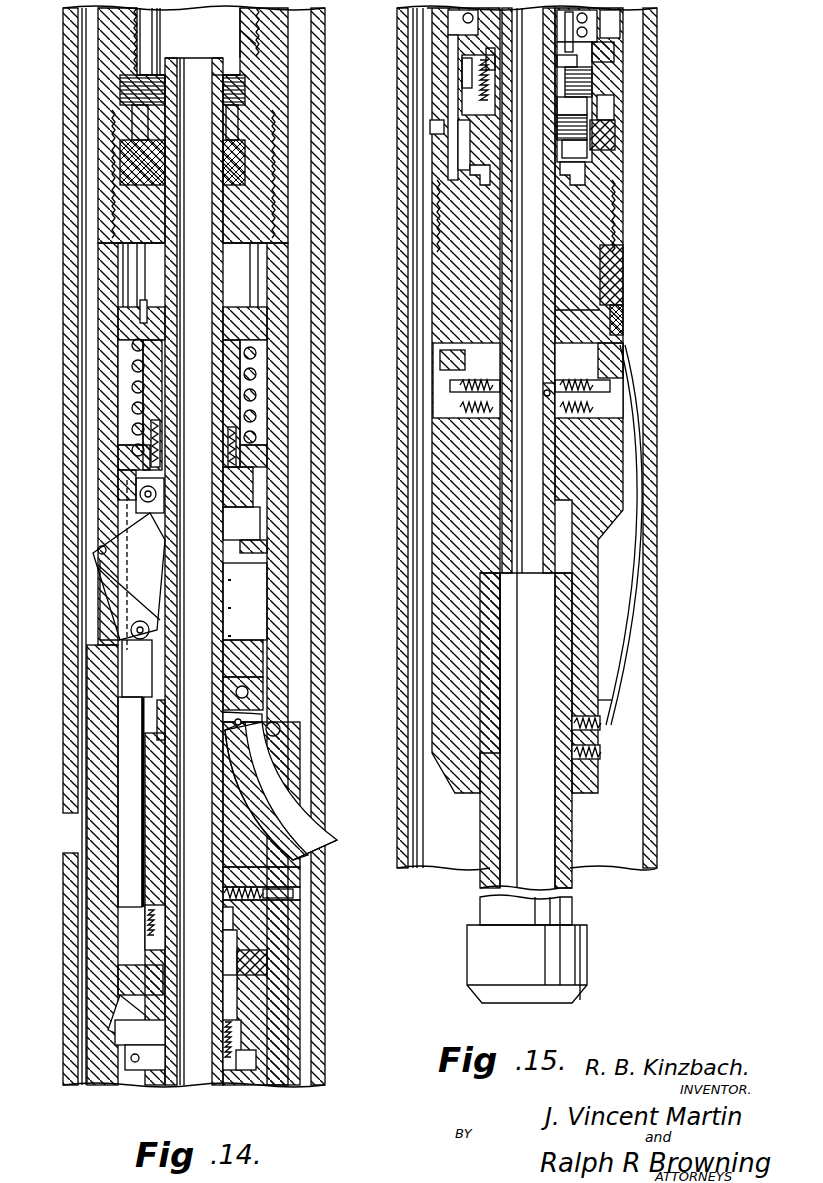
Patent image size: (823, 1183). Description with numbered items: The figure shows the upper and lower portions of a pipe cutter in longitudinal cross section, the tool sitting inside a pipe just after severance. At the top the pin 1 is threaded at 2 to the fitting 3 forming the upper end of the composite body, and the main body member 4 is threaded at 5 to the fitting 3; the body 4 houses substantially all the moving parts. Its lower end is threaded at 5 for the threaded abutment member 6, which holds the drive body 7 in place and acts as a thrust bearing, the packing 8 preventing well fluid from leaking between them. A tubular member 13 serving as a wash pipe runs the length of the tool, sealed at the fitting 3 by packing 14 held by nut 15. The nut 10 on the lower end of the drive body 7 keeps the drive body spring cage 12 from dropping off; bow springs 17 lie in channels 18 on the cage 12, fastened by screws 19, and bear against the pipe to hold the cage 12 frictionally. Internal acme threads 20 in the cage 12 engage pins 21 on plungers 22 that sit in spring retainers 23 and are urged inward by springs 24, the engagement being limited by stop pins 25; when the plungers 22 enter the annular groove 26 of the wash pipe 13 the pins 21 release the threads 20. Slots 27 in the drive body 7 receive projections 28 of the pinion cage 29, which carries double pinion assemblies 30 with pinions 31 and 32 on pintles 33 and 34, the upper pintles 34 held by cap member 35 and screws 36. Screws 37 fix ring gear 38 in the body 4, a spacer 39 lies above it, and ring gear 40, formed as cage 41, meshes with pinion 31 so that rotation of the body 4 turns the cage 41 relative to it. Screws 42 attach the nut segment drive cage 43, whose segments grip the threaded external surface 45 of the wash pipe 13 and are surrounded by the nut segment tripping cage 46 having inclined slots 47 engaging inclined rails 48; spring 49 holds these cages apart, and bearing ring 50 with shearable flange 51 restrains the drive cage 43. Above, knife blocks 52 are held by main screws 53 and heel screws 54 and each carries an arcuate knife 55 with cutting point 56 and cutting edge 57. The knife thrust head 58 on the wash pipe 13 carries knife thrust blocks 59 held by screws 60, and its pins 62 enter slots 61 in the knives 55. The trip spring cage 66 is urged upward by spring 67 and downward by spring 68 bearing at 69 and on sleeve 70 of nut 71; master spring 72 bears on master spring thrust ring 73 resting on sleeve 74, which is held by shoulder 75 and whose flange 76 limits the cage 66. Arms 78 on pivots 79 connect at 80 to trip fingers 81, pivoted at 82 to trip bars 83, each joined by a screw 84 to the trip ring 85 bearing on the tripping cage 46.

In FIG. 14, the pin 1 is at (254, 22).
In FIG. 14, the thread 2 is at (257, 38).
In FIG. 14, the fitting 3 is at (277, 80).
In FIG. 14, the main body member 4 is at (280, 397).
In FIG. 15, the thread 5 is at (617, 230).
In FIG. 15, the threaded abutment member 6 is at (607, 287).
In FIG. 15, the drive body 7 is at (583, 313).
In FIG. 15, the packing 8 is at (620, 320).
In FIG. 15, the nut 10 is at (568, 957).
In FIG. 15, the drive body spring cage 12 is at (443, 590).
In FIG. 14, the tubular member 13 is at (237, 452).
In FIG. 15, the tubular member 13 is at (557, 262).
In FIG. 14, the packing 14 is at (143, 170).
In FIG. 14, the nut 15 is at (143, 127).
In FIG. 15, the bow springs 17 is at (639, 607).
In FIG. 15, the channels 18 is at (612, 557).
In FIG. 15, the screws 19 is at (607, 722).
In FIG. 15, the internal acme threads 20 is at (603, 353).
In FIG. 15, the pins 21 is at (588, 385).
In FIG. 15, the plungers 22 is at (553, 387).
In FIG. 15, the spring retainers 23 is at (470, 405).
In FIG. 15, the springs 24 is at (470, 380).
In FIG. 15, the stop pins 25 is at (453, 387).
In FIG. 15, the annular groove 26 is at (547, 393).
In FIG. 15, the slots 27 is at (573, 173).
In FIG. 15, the projections 28 is at (475, 175).
In FIG. 15, the pinion cage 29 is at (433, 127).
In FIG. 15, the double pinion assembly 30 is at (575, 107).
In FIG. 15, the pinion 31 is at (582, 80).
In FIG. 15, the pinion 32 is at (572, 128).
In FIG. 15, the pintles 33 is at (575, 150).
In FIG. 15, the pintles 34 is at (577, 62).
In FIG. 15, the cap member 35 is at (492, 55).
In FIG. 15, the screws 36 is at (460, 88).
In FIG. 15, the screws 37 is at (460, 145).
In FIG. 15, the ring gear 38 is at (595, 132).
In FIG. 15, the spacer 39 is at (607, 107).
In FIG. 15, the ring gear 40 is at (483, 118).
In FIG. 15, the cage 41 is at (600, 53).
In FIG. 14, the screws 42 is at (241, 1050).
In FIG. 15, the screws 42 is at (575, 37).
In FIG. 14, the nut segment drive cage 43 is at (233, 1023).
In FIG. 15, the nut segment drive cage 43 is at (588, 28).
In FIG. 14, the threaded external surface 45 is at (228, 985).
In FIG. 14, the nut segment tripping cage 46 is at (127, 982).
In FIG. 14, the inclined slots 47 is at (117, 1007).
In FIG. 14, the inclined rails 48 is at (137, 1030).
In FIG. 14, the spring 49 is at (130, 1060).
In FIG. 15, the spring 49 is at (470, 18).
In FIG. 14, the bearing ring 50 is at (231, 938).
In FIG. 14, the shearable flange 51 is at (228, 948).
In FIG. 14, the knife blocks 52 is at (290, 755).
In FIG. 14, the main screws 53 is at (280, 731).
In FIG. 14, the heel screws 54 is at (275, 892).
In FIG. 14, the arcuate knife 55 is at (312, 842).
In FIG. 14, the cutting point 56 is at (305, 862).
In FIG. 14, the cutting edge 57 is at (323, 870).
In FIG. 14, the knife thrust head 58 is at (250, 657).
In FIG. 14, the knife thrust blocks 59 is at (257, 682).
In FIG. 14, the screws 60 is at (249, 692).
In FIG. 14, the slots 61 is at (252, 720).
In FIG. 14, the pins 62 is at (238, 726).
In FIG. 14, the trip spring cage 66 is at (240, 493).
In FIG. 14, the spring 67 is at (150, 525).
In FIG. 14, the spring 68 is at (127, 450).
In FIG. 14, the cage part 69 is at (258, 475).
In FIG. 14, the sleeve 70 is at (140, 398).
In FIG. 14, the nut 71 is at (123, 325).
In FIG. 14, the master spring 72 is at (150, 428).
In FIG. 14, the master spring thrust ring 73 is at (120, 457).
In FIG. 14, the sleeve 74 is at (262, 512).
In FIG. 14, the shoulder 75 is at (280, 573).
In FIG. 14, the flange 76 is at (245, 546).
In FIG. 14, the arms 78 is at (120, 520).
In FIG. 14, the pivots 79 is at (140, 496).
In FIG. 14, the pivots 80 is at (100, 554).
In FIG. 14, the trip fingers 81 is at (110, 583).
In FIG. 14, the pivots 82 is at (131, 628).
In FIG. 14, the trip bars 83 is at (130, 772).
In FIG. 14, the screw 84 is at (153, 943).
In FIG. 14, the trip ring 85 is at (260, 963).